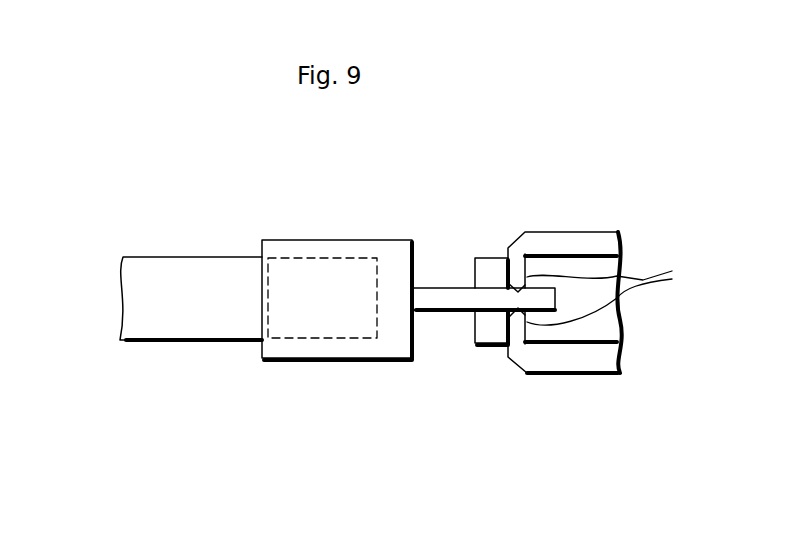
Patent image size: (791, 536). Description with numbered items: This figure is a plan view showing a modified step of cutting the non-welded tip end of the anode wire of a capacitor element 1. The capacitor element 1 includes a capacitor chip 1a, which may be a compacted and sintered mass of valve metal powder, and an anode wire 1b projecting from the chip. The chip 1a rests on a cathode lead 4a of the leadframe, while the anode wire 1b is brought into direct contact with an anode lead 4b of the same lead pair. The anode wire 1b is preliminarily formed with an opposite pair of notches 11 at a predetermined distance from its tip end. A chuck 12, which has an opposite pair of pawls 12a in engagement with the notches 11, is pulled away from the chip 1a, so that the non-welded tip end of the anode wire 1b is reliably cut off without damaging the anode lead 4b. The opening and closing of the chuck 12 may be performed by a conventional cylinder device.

The capacitor element 1 is at (408, 279).
The capacitor chip 1a is at (340, 238).
The anode wire 1b is at (445, 305).
The cathode lead 4a is at (190, 273).
The anode lead 4b is at (487, 258).
The notches 11 is at (618, 293).
The chuck 12 is at (585, 240).
The pawls 12a is at (522, 275).